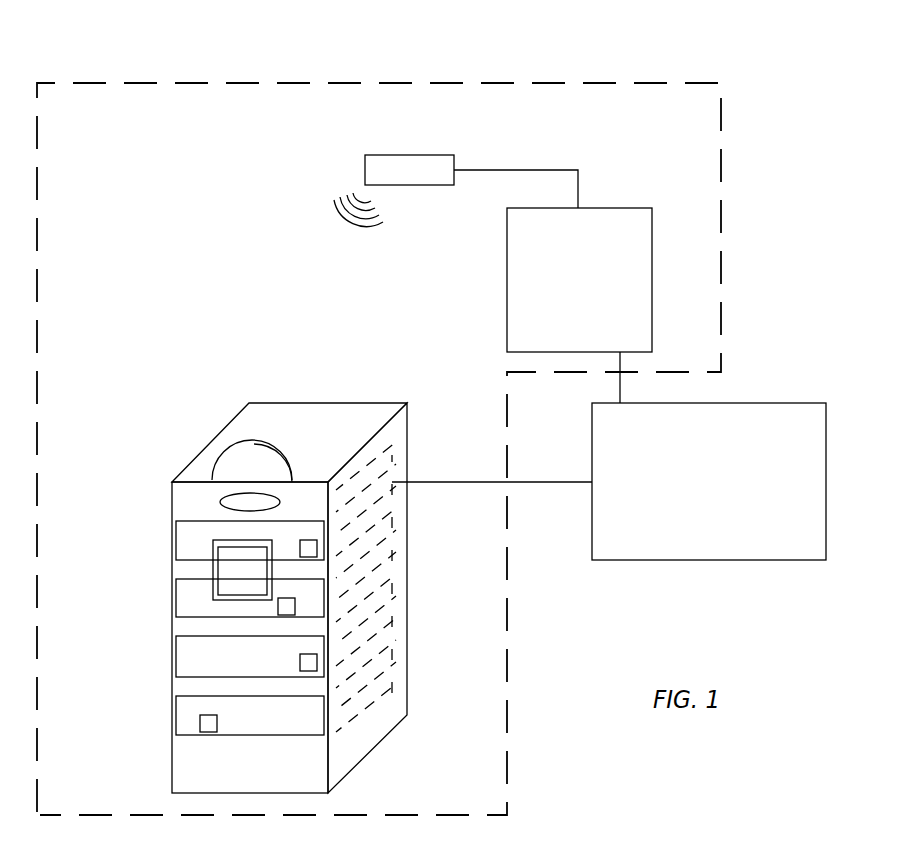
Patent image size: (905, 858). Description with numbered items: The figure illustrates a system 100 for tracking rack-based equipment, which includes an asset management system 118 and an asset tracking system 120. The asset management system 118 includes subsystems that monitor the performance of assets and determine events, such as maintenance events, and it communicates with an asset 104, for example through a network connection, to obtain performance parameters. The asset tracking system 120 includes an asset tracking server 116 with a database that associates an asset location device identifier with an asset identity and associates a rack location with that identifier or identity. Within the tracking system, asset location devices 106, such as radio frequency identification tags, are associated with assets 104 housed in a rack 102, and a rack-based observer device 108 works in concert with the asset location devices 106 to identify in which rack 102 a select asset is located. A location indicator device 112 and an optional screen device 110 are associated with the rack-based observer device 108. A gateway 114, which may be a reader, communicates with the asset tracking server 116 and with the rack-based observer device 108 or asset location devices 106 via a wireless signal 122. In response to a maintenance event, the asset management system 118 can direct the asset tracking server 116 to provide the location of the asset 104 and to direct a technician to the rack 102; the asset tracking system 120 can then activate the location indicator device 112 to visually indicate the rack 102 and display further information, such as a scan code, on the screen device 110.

The system 100 is at (603, 47).
The rack 102 is at (268, 402).
The asset 104 is at (175, 661).
The asset location device 106 is at (205, 733).
The rack-based observer device 108 is at (220, 503).
The screen device 110 is at (213, 571).
The location indicator device 112 is at (250, 443).
The gateway 114 is at (410, 155).
The asset tracking server 116 is at (607, 207).
The asset management system 118 is at (730, 402).
The asset tracking system 120 is at (462, 82).
The wireless signal 122 is at (334, 209).